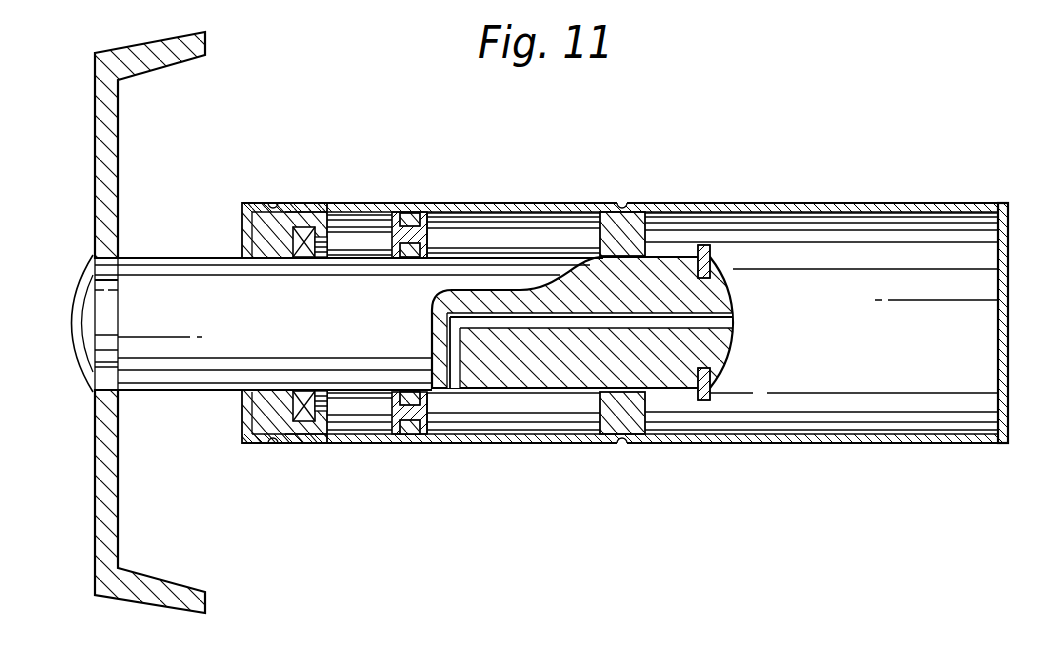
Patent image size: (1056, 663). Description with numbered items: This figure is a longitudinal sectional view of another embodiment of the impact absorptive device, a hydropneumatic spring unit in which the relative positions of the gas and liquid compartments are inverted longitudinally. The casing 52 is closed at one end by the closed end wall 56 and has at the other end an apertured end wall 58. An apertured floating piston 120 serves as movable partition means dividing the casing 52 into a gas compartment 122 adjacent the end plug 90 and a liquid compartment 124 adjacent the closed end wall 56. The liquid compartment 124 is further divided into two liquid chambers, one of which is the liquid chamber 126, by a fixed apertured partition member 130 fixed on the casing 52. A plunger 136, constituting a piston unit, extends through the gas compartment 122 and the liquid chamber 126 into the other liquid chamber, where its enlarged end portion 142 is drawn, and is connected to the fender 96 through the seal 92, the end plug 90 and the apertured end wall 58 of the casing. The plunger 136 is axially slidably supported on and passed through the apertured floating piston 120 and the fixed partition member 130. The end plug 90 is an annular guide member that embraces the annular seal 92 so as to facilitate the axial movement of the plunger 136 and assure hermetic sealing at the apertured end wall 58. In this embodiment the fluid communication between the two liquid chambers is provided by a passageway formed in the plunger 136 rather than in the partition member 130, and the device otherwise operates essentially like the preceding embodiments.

The casing 52 is at (810, 443).
The closed end wall 56 is at (1010, 220).
The apertured end wall 58 is at (243, 412).
The end plug 90 is at (267, 215).
The seal 92 is at (305, 230).
The fender 96 is at (118, 133).
The apertured floating piston 120 is at (427, 238).
The gas compartment 122 is at (358, 427).
The liquid compartment 124 is at (866, 357).
The liquid chamber 126 is at (517, 420).
The fixed apertured partition member 130 is at (647, 405).
The plunger 136 is at (308, 339).
The piston head 142 is at (733, 323).